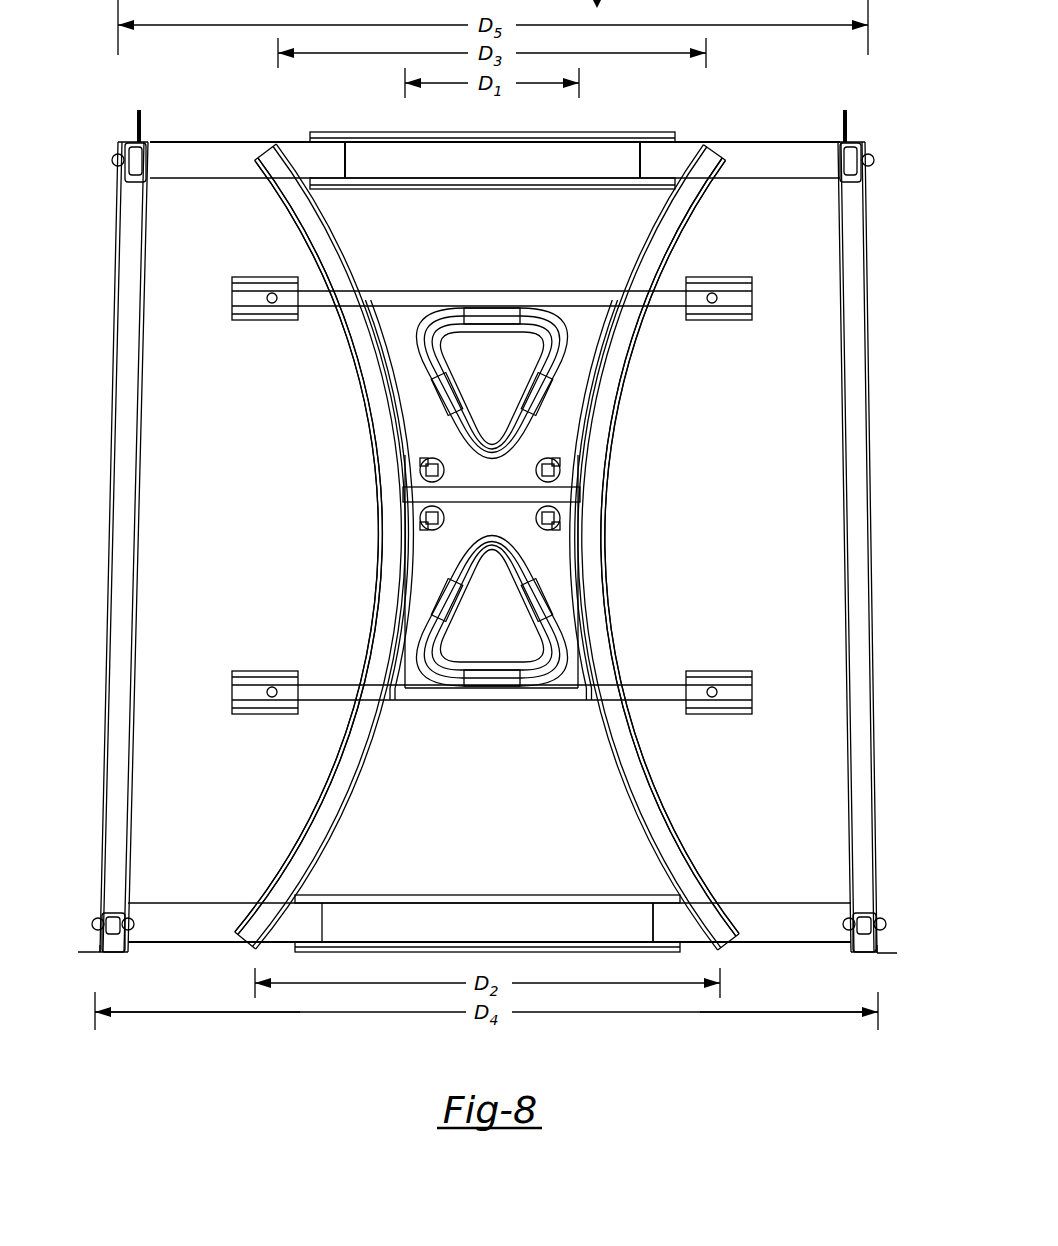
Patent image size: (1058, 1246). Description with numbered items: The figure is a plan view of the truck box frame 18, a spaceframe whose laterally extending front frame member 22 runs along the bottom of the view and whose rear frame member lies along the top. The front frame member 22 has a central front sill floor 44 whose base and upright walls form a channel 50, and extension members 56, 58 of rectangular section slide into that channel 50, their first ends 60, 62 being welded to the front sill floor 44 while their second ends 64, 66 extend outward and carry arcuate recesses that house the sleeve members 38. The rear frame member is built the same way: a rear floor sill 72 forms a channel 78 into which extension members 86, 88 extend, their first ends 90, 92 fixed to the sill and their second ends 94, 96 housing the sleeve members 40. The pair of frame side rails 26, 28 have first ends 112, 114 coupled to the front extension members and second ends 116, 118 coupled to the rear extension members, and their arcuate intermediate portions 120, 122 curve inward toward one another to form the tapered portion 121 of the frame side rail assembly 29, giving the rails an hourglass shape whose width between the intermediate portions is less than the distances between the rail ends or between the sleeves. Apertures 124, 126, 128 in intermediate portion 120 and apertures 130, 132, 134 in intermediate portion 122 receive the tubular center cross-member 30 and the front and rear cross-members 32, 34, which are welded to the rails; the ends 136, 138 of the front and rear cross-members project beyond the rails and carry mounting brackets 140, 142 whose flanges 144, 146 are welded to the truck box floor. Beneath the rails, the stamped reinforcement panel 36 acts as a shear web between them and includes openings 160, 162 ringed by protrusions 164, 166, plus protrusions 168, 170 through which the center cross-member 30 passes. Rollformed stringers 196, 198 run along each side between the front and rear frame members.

The truck box frame 18 is at (403, 1022).
The front frame member 22 is at (580, 1022).
The frame side rail 26 is at (603, 574).
The frame side rail 28 is at (378, 574).
The frame side rail assembly 29 is at (606, 512).
The center cross-member 30 is at (497, 490).
The front cross-member 32 is at (480, 700).
The rear cross-member 34 is at (430, 300).
The right plate 36 is at (582, 325).
The sleeve member 38 is at (104, 920).
The sleeve member 40 is at (116, 166).
The front sill floor 44 is at (432, 895).
The channel 50 is at (507, 902).
The extension member 56 is at (798, 905).
The extension member 58 is at (180, 903).
The first end 60 is at (662, 930).
The first end 62 is at (322, 915).
The second end 64 is at (832, 925).
The second end 66 is at (150, 925).
The rear floor sill 72 is at (560, 135).
The channel 78 is at (472, 186).
The extension member 86 is at (800, 182).
The extension member 88 is at (200, 178).
The first end 90 is at (682, 162).
The first end 92 is at (328, 160).
The second end 94 is at (812, 160).
The second end 96 is at (166, 158).
The first end 112 is at (718, 925).
The first end 114 is at (262, 920).
The second end 116 is at (709, 162).
The second end 118 is at (270, 160).
The intermediate portion 120 is at (608, 412).
The tapered portion 121 is at (378, 512).
The intermediate portion 122 is at (372, 412).
The aperture 124 is at (578, 487).
The aperture 126 is at (590, 700).
The aperture 128 is at (626, 262).
The aperture 130 is at (408, 487).
The aperture 132 is at (388, 700).
The aperture 134 is at (362, 290).
The end 136 is at (232, 690).
The end 138 is at (232, 298).
The mounting bracket 140 is at (243, 660).
The mounting bracket 142 is at (247, 327).
The flange 144 is at (250, 715).
The flange 146 is at (242, 280).
The opening 160 is at (453, 657).
The opening 162 is at (456, 387).
The protrusion 164 is at (540, 600).
The protrusion 166 is at (542, 332).
The protrusion 168 is at (548, 468).
The protrusion 170 is at (432, 468).
The stringer 196 is at (868, 516).
The stringer 198 is at (116, 516).